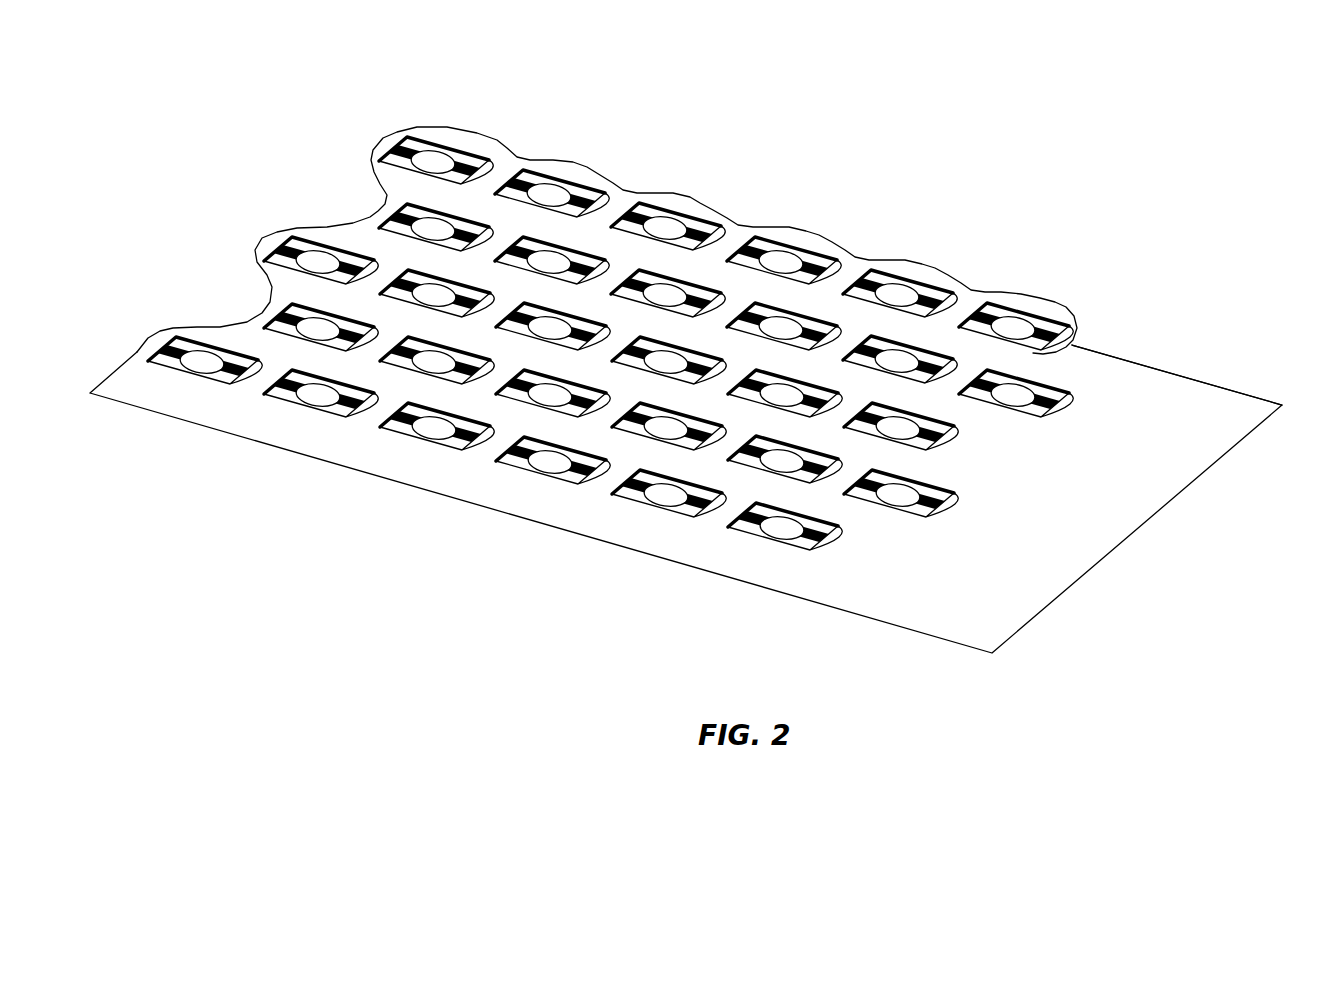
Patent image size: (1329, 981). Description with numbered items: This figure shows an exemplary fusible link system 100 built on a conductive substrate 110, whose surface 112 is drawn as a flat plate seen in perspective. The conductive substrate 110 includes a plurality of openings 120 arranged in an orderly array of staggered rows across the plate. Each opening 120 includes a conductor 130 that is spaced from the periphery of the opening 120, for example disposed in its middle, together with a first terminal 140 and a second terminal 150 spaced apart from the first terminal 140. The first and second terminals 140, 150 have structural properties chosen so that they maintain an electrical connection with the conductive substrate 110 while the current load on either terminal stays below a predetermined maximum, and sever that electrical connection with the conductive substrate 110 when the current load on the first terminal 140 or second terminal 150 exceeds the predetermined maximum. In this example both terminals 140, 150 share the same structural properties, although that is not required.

The fusible link system 100 is at (254, 146).
The conductive substrate 110 is at (1065, 600).
The substrate surface 112 is at (1123, 486).
The opening 120 is at (248, 476).
The conductor 130 is at (330, 430).
The first terminal 140 is at (488, 471).
The second terminal 150 is at (498, 507).